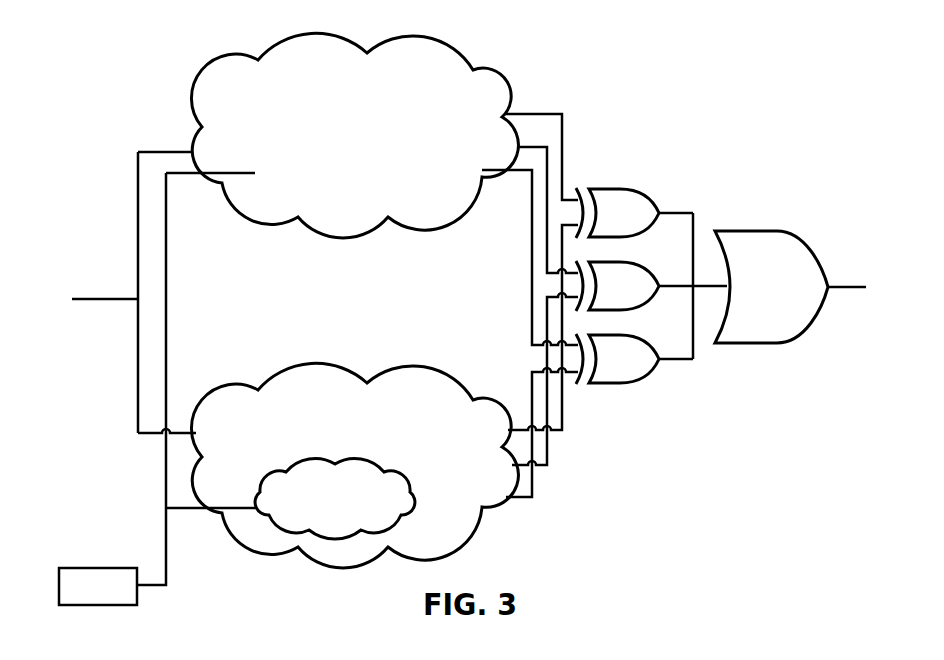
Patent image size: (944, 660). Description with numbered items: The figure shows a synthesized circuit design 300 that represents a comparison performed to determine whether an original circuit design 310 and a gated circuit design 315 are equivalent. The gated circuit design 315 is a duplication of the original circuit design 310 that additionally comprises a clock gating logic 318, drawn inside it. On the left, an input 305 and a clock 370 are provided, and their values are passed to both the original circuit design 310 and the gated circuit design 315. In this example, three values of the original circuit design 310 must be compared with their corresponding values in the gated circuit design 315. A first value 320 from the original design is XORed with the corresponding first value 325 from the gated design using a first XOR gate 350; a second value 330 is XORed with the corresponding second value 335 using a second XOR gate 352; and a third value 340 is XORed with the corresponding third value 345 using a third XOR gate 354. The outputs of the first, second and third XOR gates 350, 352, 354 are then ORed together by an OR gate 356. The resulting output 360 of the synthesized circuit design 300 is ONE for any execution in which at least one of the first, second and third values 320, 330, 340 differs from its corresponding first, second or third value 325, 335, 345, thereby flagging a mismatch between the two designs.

The synthesized circuit design 300 is at (130, 105).
The input 305 is at (75, 298).
The original circuit design 310 is at (472, 64).
The gated circuit design 315 is at (425, 369).
The clock gating logic 318 is at (378, 466).
The first value 320 is at (511, 113).
The corresponding first value 325 is at (563, 421).
The second value 330 is at (519, 146).
The corresponding second value 335 is at (549, 462).
The third value 340 is at (530, 186).
The corresponding third value 345 is at (533, 494).
The first XOR gate 350 is at (620, 189).
The second XOR gate 352 is at (620, 262).
The third XOR gate 354 is at (626, 335).
The OR gate 356 is at (762, 231).
The output 360 is at (846, 287).
The clock 370 is at (104, 567).